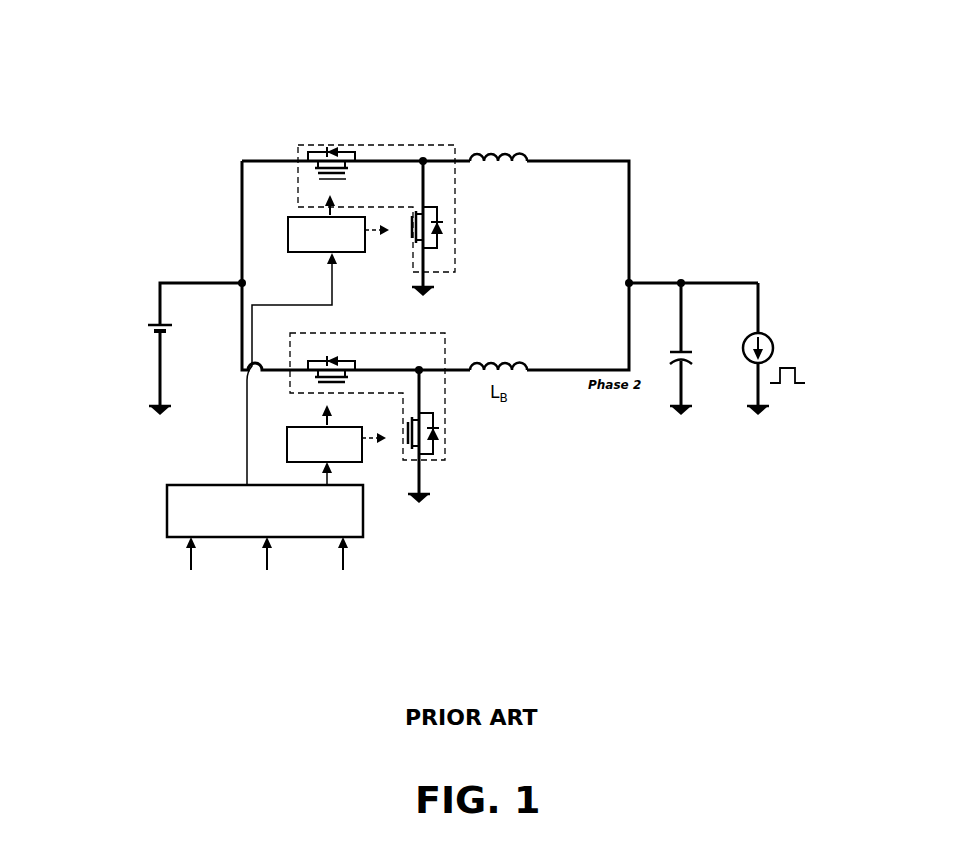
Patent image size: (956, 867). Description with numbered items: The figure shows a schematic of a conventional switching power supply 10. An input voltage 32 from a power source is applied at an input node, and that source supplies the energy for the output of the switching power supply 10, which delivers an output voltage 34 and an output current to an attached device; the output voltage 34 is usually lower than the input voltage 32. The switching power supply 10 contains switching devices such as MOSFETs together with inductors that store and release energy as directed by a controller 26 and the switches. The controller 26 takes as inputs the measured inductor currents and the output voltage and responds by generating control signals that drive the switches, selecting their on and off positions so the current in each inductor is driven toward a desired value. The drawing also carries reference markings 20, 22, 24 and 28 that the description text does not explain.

The two-phase buck converter 10 is at (468, 90).
The phase 1 switch pair 20 is at (390, 144).
The phase 2 switch pair 22 is at (455, 420).
The drivers and latches 24 is at (288, 225).
The control circuit 26 is at (372, 532).
The phase 1 inductor output 28 is at (532, 160).
The input voltage source 32 is at (160, 322).
The output load 34 is at (708, 377).